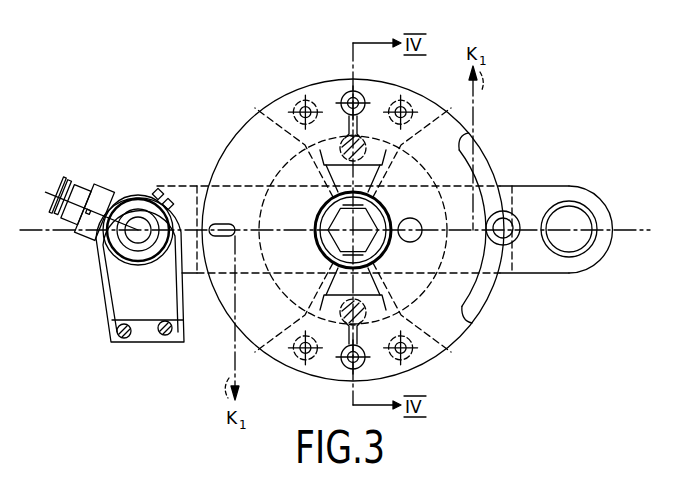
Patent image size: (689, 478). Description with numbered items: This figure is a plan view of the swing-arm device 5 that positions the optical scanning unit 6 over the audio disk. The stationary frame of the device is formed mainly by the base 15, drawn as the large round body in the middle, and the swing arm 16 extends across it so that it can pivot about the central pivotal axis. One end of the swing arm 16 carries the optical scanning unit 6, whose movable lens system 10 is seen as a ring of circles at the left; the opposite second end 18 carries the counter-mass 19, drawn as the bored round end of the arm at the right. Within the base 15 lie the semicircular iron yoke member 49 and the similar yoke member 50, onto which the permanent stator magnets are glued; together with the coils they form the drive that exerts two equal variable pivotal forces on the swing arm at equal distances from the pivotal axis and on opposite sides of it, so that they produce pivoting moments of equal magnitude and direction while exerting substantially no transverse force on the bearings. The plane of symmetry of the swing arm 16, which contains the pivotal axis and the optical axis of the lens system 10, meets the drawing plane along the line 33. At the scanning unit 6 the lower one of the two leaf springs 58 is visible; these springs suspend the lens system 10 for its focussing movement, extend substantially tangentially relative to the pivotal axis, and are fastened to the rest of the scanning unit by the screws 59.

The swing-arm device 5 is at (477, 124).
The optical scanning unit 6 is at (97, 265).
The movable lens system 10 is at (140, 212).
The base 15 is at (241, 152).
The swing arm 16 is at (527, 195).
The second end 18 is at (606, 214).
The counter-mass 19 is at (569, 208).
The line 33 is at (649, 233).
The semicircular iron yoke member 49 is at (382, 91).
The yoke member 50 is at (329, 96).
The leaf springs 58 is at (133, 297).
The screws 59 is at (165, 336).